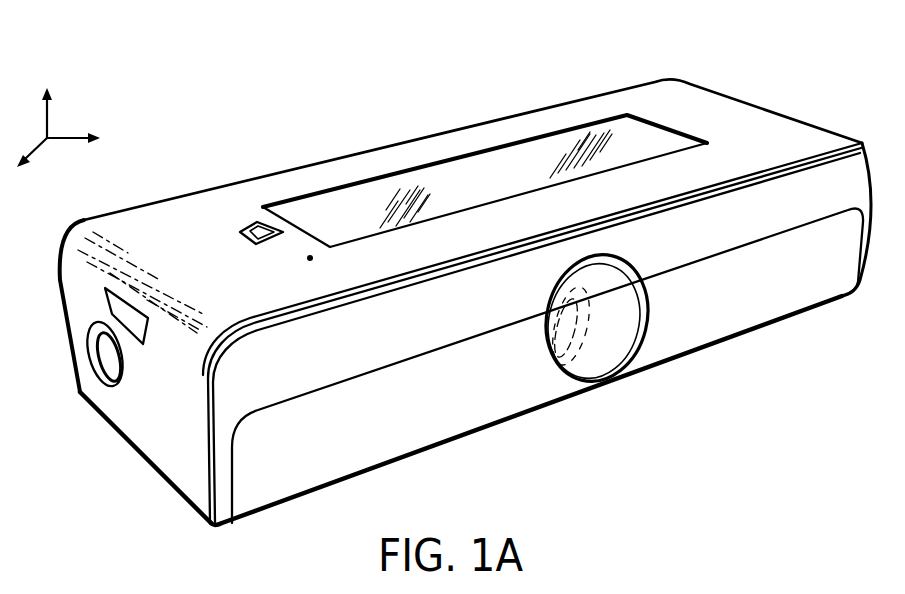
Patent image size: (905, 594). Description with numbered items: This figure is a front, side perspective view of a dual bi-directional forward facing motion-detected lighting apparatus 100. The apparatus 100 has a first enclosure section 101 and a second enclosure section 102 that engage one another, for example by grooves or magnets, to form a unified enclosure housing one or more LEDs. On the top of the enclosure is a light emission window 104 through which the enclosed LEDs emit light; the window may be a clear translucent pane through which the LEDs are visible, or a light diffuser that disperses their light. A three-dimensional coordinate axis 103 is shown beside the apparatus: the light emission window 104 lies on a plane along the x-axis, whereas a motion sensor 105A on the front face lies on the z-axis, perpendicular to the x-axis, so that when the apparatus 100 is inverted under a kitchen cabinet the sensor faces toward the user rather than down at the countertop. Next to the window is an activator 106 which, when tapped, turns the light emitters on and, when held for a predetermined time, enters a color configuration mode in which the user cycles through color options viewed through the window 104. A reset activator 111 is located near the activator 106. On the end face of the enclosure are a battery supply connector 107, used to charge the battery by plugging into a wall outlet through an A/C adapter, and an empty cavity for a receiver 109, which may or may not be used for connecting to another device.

The dual bi-directional forward facing motion-detected lighting apparatus 100 is at (441, 99).
The first enclosure section 101 is at (740, 127).
The second enclosure section 102 is at (752, 297).
The three-dimensional coordinate axis 103 is at (78, 103).
The light emission window 104 is at (345, 205).
The motion sensor 105A is at (617, 333).
The activator 106 is at (255, 228).
The battery supply connector 107 is at (101, 372).
The receiver 109 is at (136, 334).
The reset activator 111 is at (307, 259).